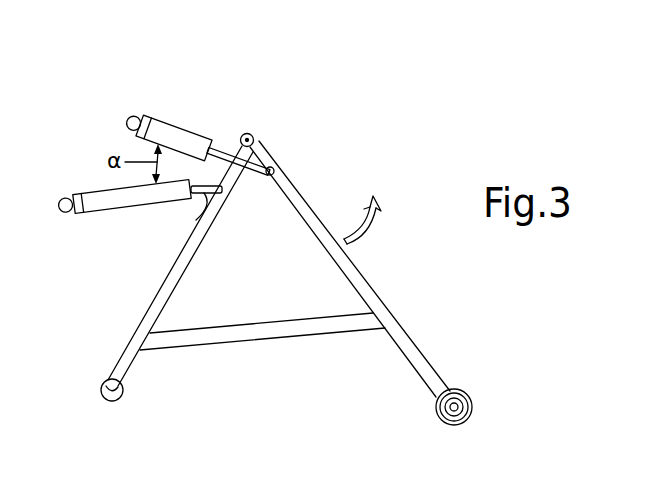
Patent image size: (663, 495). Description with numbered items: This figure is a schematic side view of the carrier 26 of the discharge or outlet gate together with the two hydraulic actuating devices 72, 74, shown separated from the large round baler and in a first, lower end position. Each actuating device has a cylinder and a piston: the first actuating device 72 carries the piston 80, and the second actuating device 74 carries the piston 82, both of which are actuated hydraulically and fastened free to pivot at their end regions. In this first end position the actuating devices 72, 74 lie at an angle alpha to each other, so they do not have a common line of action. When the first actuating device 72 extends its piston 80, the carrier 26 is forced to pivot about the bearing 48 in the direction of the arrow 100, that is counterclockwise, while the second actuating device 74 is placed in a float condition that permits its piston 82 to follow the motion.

The carrier 26 is at (421, 341).
The bearing 48 is at (253, 133).
The first actuating device 72 is at (103, 218).
The second actuating device 74 is at (175, 115).
The piston 80 is at (203, 203).
The piston 82 is at (262, 157).
The arrow 100 is at (371, 229).